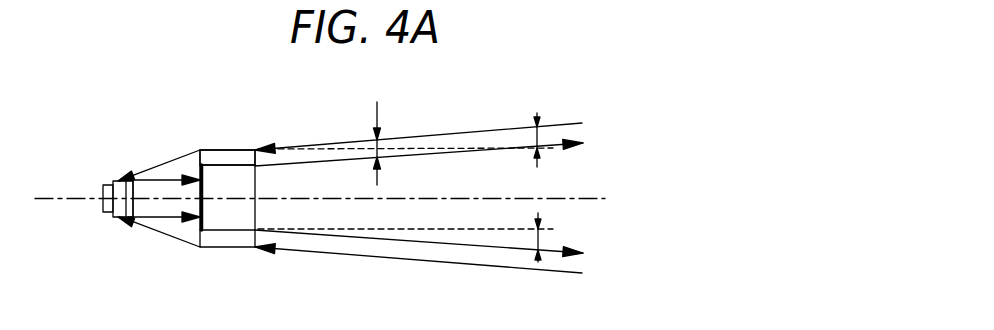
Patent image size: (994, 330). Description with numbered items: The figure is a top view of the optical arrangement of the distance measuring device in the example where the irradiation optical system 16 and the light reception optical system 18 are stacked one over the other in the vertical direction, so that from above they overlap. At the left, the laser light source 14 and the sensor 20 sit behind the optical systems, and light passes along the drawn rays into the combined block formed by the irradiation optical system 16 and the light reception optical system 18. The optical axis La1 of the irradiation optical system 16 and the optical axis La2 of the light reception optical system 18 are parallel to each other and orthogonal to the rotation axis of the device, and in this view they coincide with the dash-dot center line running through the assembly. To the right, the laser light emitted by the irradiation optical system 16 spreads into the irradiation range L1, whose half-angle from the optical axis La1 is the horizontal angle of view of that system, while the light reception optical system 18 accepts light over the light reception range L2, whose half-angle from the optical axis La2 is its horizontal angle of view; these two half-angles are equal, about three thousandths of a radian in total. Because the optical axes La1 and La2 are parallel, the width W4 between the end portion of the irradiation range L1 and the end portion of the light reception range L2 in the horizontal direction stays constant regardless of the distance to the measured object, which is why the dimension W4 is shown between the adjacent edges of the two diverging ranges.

The laser light source 14 is at (130, 207).
The irradiation optical system 16 is at (230, 221).
The light reception optical system 18 is at (229, 158).
The sensor 20 is at (103, 206).
The optical axis La1 is at (123, 186).
The optical axis La2 is at (63, 190).
The irradiation range L1 is at (437, 243).
The light reception range L2 is at (440, 134).
The width W4 is at (359, 139).